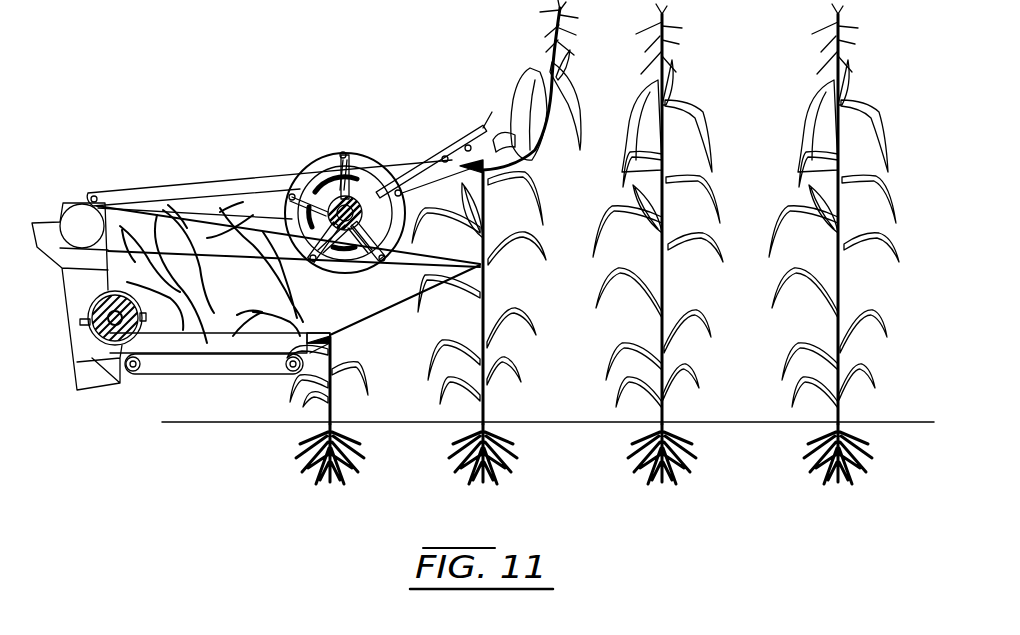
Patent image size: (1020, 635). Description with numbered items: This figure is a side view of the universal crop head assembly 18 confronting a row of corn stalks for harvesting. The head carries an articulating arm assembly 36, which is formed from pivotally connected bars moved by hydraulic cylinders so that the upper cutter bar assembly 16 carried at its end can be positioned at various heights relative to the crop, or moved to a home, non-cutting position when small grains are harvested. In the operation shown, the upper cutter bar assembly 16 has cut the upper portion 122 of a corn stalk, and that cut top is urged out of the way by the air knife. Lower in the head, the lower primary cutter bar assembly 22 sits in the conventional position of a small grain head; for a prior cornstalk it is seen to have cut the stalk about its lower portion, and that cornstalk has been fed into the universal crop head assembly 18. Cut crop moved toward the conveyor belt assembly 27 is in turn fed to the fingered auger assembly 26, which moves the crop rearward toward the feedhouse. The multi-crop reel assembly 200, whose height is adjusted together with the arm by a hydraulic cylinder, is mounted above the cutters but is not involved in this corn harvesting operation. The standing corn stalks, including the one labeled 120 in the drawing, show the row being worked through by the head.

The universal crop head assembly 18 is at (294, 254).
The articulating arm assembly 36 is at (258, 182).
The multi-crop reel assembly 200 is at (330, 148).
The upper cutter bar assembly 16 is at (492, 163).
The fingered auger assembly 26 is at (100, 305).
The conveyor belt assembly 27 is at (220, 373).
The lower primary cutter bar assembly 22 is at (334, 326).
The corn plant stalk 120 is at (490, 270).
The upper portion of corn stalk 122 is at (537, 70).